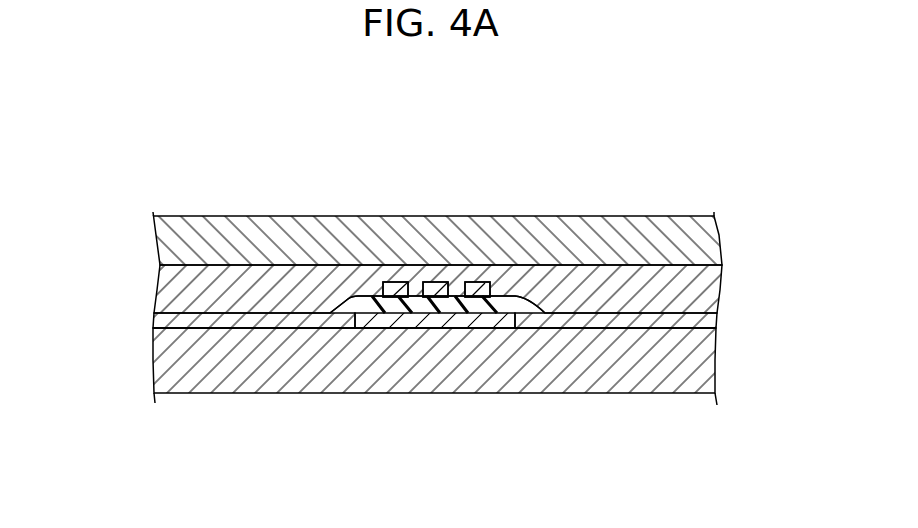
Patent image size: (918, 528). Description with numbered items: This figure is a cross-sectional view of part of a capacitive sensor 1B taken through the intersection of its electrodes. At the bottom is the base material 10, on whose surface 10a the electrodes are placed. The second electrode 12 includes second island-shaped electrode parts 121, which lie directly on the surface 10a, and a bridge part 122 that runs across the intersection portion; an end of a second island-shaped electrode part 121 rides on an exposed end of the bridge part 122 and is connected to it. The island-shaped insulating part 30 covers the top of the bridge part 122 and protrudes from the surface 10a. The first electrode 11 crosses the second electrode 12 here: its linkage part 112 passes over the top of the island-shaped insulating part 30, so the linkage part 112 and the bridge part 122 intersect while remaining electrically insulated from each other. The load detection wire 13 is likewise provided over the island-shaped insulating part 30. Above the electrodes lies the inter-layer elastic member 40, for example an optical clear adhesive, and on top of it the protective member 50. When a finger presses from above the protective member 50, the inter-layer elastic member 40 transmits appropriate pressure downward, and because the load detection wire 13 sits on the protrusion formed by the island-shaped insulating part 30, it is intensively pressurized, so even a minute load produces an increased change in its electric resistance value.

The sensor device 1B is at (679, 159).
The base material 10 is at (702, 372).
The surface of the base material 10a is at (155, 315).
The second electrode 12 is at (435, 299).
The second island-shaped electrode part 121 is at (240, 327).
The bridge part 122 is at (387, 320).
The island-shaped insulating part 30 is at (424, 305).
The first electrode 11 is at (438, 222).
The linkage part 112 is at (438, 293).
The load detection wire 13 is at (392, 292).
The inter-layer elastic member 40 is at (702, 285).
The protective member 50 is at (702, 236).